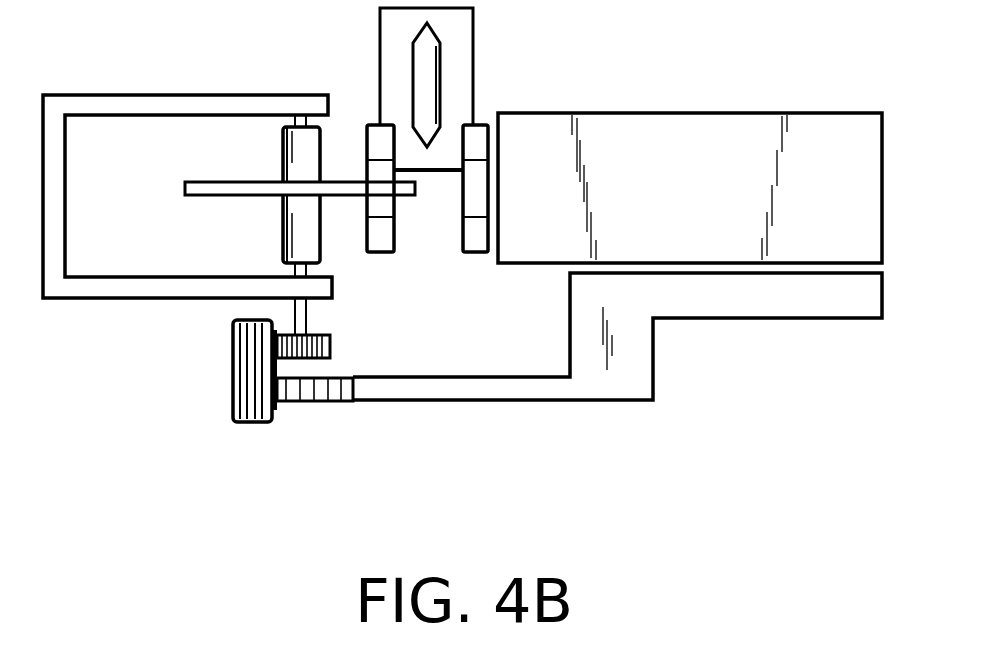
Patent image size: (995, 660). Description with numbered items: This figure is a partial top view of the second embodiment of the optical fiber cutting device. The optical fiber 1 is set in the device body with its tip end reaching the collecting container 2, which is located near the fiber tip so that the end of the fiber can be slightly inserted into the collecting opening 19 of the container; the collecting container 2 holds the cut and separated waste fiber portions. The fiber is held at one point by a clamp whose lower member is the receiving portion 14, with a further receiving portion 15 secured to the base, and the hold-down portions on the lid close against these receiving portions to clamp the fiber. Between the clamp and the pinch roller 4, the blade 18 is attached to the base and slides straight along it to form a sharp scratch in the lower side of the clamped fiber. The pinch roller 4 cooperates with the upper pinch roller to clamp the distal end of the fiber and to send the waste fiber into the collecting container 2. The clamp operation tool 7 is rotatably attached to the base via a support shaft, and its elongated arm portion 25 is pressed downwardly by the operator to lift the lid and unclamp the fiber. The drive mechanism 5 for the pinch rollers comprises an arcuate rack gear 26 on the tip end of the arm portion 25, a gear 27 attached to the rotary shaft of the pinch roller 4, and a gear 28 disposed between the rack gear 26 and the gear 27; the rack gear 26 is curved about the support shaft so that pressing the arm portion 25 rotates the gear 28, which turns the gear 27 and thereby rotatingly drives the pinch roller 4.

The optical fiber 1 is at (225, 183).
The collecting container 2 is at (117, 292).
The pinch roller 4 is at (282, 230).
The drive mechanism 5 is at (306, 437).
The clamp operation tool 7 is at (473, 401).
The receiving portion 14 is at (380, 253).
The receiving portion 15 is at (473, 253).
The blade 18 is at (430, 70).
The collecting opening 19 is at (333, 133).
The arm portion 25 is at (525, 401).
The rack gear 26 is at (334, 433).
The gear 27 is at (288, 403).
The gear 28 is at (250, 423).